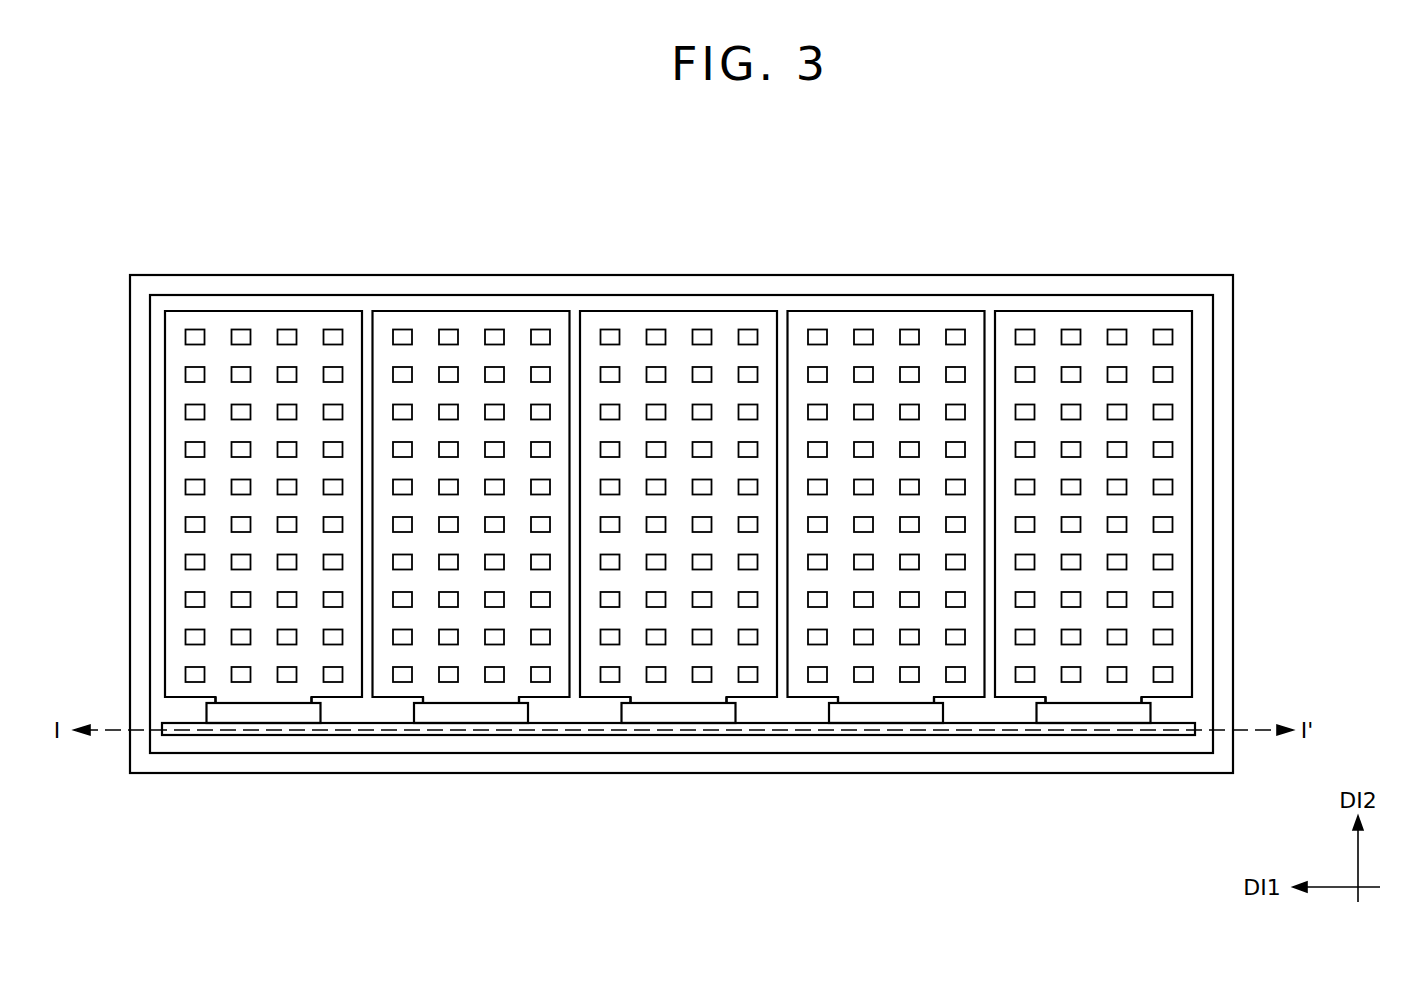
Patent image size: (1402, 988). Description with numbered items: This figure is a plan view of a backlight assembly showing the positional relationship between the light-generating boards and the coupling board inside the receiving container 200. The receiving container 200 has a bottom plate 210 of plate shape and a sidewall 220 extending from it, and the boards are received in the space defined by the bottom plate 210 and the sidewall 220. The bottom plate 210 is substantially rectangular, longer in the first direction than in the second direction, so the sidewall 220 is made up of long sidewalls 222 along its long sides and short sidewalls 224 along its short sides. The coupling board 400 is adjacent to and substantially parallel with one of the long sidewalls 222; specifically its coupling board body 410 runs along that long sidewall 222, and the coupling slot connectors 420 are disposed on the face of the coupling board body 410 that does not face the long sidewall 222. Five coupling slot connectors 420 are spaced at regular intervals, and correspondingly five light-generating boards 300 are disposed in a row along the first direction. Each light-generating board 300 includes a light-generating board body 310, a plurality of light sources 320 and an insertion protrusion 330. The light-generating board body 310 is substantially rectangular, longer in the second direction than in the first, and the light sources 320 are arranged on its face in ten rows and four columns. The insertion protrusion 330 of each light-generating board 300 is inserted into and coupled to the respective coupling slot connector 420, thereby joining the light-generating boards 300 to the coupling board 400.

The receiving container 200 is at (175, 158).
The bottom plate 210 is at (282, 300).
The sidewall 220 is at (137, 200).
The long sidewalls 222 is at (213, 287).
The short sidewalls 224 is at (143, 313).
The light-generating board 300 is at (1320, 578).
The light-generating board body 310 is at (1168, 584).
The light sources 320 is at (1172, 638).
The insertion protrusion 330 is at (1132, 700).
The coupling board 400 is at (300, 740).
The coupling board body 410 is at (457, 735).
The coupling slot connector 420 is at (678, 718).